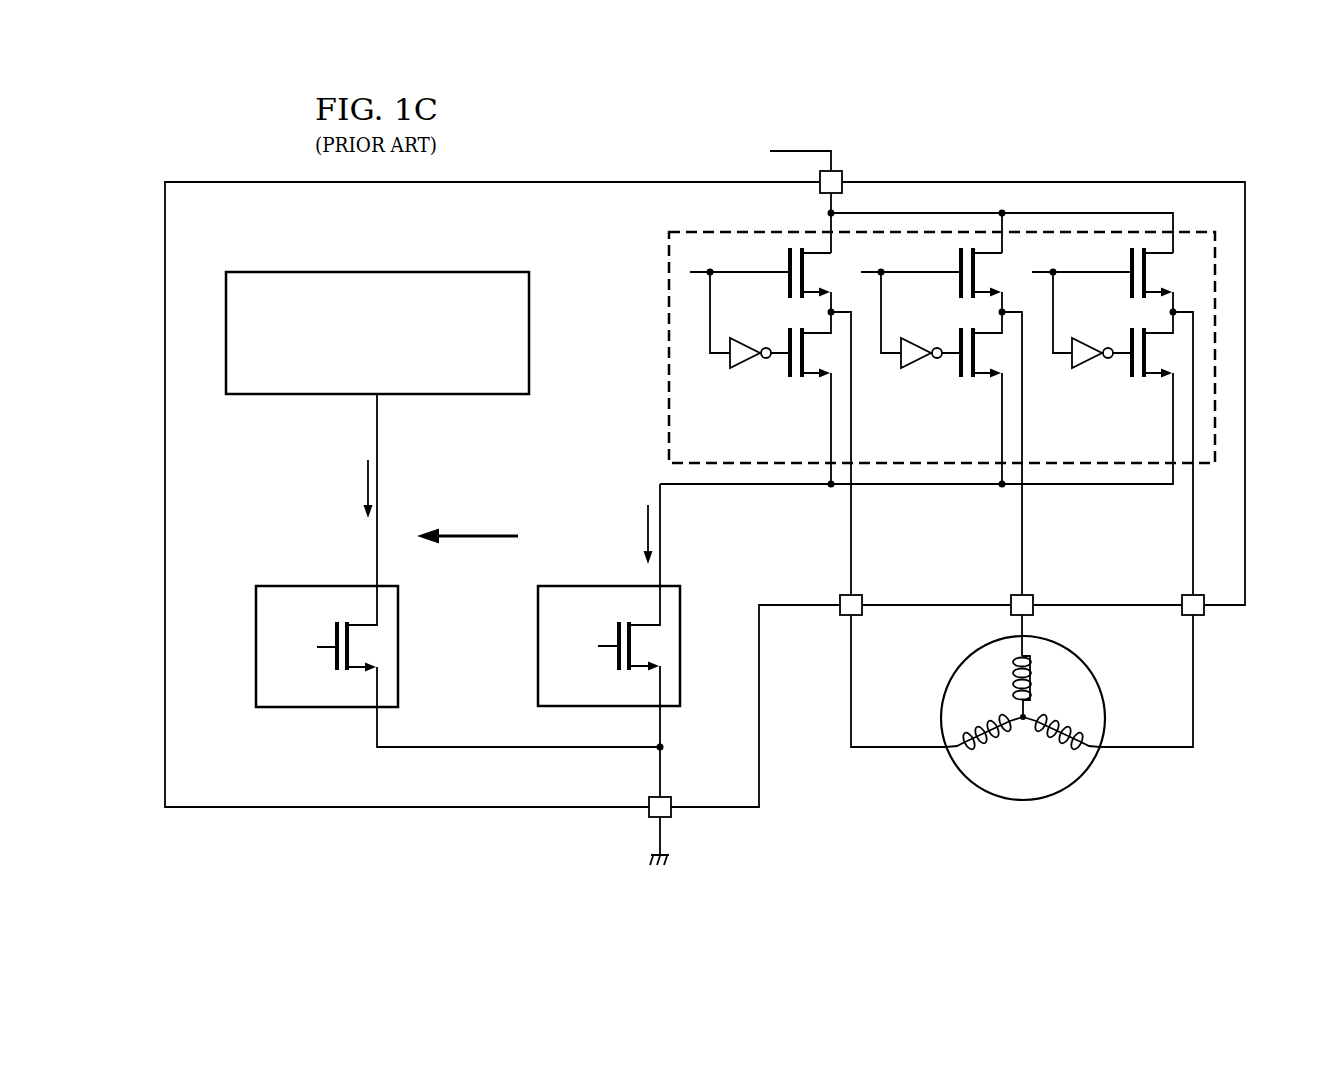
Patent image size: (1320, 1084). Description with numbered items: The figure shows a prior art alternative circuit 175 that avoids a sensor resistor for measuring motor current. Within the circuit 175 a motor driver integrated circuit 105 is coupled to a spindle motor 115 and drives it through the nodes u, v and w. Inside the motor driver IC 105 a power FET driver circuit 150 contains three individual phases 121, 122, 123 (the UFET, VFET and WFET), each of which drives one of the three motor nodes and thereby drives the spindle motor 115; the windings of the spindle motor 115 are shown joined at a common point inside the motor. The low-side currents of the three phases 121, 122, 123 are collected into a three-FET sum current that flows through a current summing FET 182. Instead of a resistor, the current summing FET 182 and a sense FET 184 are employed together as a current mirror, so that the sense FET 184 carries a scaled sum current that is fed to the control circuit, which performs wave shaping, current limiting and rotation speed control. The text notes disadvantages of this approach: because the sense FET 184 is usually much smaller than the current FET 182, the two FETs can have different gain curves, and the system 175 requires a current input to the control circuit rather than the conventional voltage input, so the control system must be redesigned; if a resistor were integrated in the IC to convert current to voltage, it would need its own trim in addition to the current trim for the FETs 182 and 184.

The prior art alternative circuit 175 is at (1013, 148).
The motor driver integrated circuit 105 is at (397, 258).
The power FET driver circuit 150 is at (670, 288).
The first phase 121 is at (788, 370).
The second phase 122 is at (959, 370).
The third phase 123 is at (1130, 370).
The current summing FET 182 is at (616, 655).
The sense FET 184 is at (331, 648).
The spindle motor 115 is at (1057, 793).